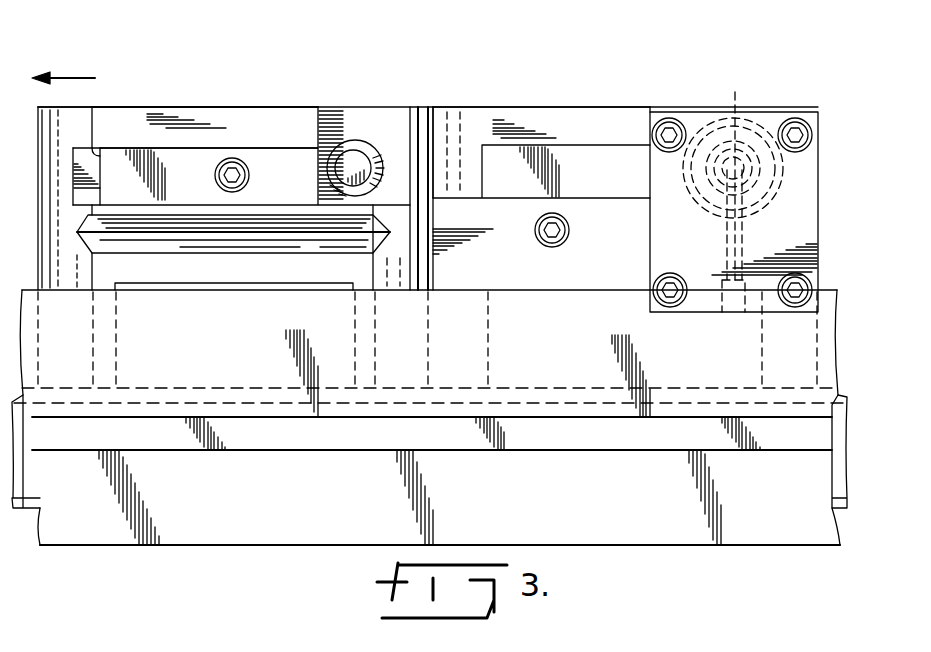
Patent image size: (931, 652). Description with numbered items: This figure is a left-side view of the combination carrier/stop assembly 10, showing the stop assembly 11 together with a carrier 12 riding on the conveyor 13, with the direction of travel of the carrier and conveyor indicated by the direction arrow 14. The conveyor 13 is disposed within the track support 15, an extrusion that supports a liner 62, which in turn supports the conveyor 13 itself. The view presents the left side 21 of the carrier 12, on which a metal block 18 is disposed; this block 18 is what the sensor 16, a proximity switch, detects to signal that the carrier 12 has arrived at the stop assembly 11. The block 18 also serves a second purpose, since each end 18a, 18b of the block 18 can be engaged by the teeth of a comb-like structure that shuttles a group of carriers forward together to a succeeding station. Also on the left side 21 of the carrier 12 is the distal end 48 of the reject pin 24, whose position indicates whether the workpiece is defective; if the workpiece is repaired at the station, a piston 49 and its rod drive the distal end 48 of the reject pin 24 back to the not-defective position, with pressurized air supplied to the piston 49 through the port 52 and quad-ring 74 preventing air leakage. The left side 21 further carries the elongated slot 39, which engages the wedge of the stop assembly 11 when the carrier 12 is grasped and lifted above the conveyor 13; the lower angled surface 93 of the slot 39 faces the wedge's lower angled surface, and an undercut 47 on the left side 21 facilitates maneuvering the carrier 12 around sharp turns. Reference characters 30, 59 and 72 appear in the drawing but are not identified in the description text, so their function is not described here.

The combination carrier/stop assembly 10 is at (588, 82).
The stop assembly 11 is at (546, 272).
The carrier 12 is at (176, 98).
The conveyor 13 is at (840, 393).
The direction arrow 14 is at (73, 75).
The track support 15 is at (613, 555).
The sensor 16 is at (547, 147).
The metal block 18 is at (185, 153).
The end of block 18a is at (95, 148).
The end of block 18b is at (317, 196).
The left side of carrier 21 is at (276, 118).
The reject pin 24 is at (368, 132).
The plate surface 30 is at (236, 106).
The elongated slot 39 is at (270, 238).
The undercut 47 is at (300, 288).
The distal end of reject pin 48 is at (352, 155).
The piston 49 is at (747, 118).
The port 52 is at (727, 233).
The center line 59 is at (719, 176).
The liner 62 is at (833, 477).
The left wall 72 is at (38, 127).
The quad-ring 74 is at (762, 207).
The lower angled surface of slot 93 is at (182, 243).